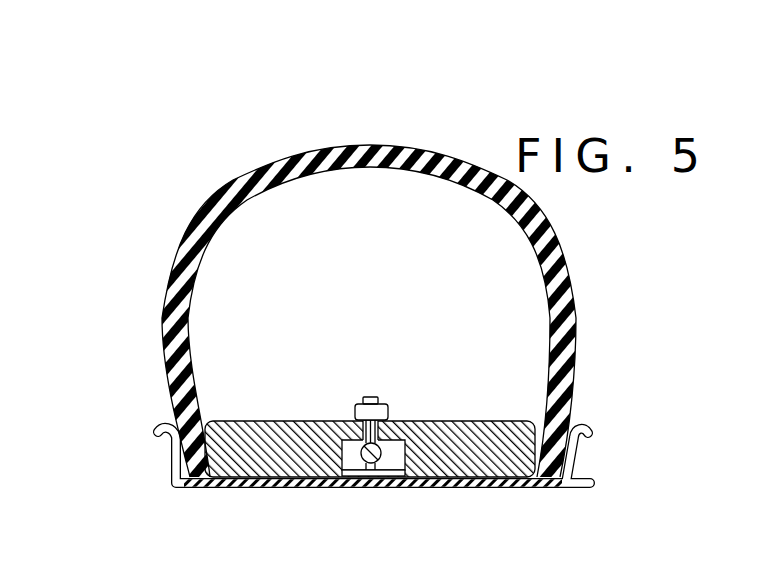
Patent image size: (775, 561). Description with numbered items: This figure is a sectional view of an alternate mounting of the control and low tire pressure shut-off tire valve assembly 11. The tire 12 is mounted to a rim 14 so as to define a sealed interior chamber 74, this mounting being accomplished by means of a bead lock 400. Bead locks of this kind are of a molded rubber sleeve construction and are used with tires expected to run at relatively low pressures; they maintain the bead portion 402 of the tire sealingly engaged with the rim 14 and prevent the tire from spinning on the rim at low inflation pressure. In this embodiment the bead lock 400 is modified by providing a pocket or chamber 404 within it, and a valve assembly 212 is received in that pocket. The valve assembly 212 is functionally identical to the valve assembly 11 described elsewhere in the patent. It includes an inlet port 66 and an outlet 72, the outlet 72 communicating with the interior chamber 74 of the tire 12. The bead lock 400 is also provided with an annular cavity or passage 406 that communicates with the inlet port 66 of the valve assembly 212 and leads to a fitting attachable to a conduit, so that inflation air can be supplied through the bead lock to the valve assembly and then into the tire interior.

The tire 12 is at (341, 140).
The control and low tire pressure shut-off tire valve assembly 11 is at (328, 412).
The rim 14 is at (158, 438).
The bead portion 402 is at (190, 463).
The bead lock 400 is at (297, 460).
The annular cavity or passage 406 is at (425, 468).
The valve assembly 212 is at (393, 432).
The pocket or chamber 404 is at (343, 461).
The outlet 72 is at (371, 396).
The inlet port 66 is at (371, 477).
The interior chamber 74 is at (352, 290).